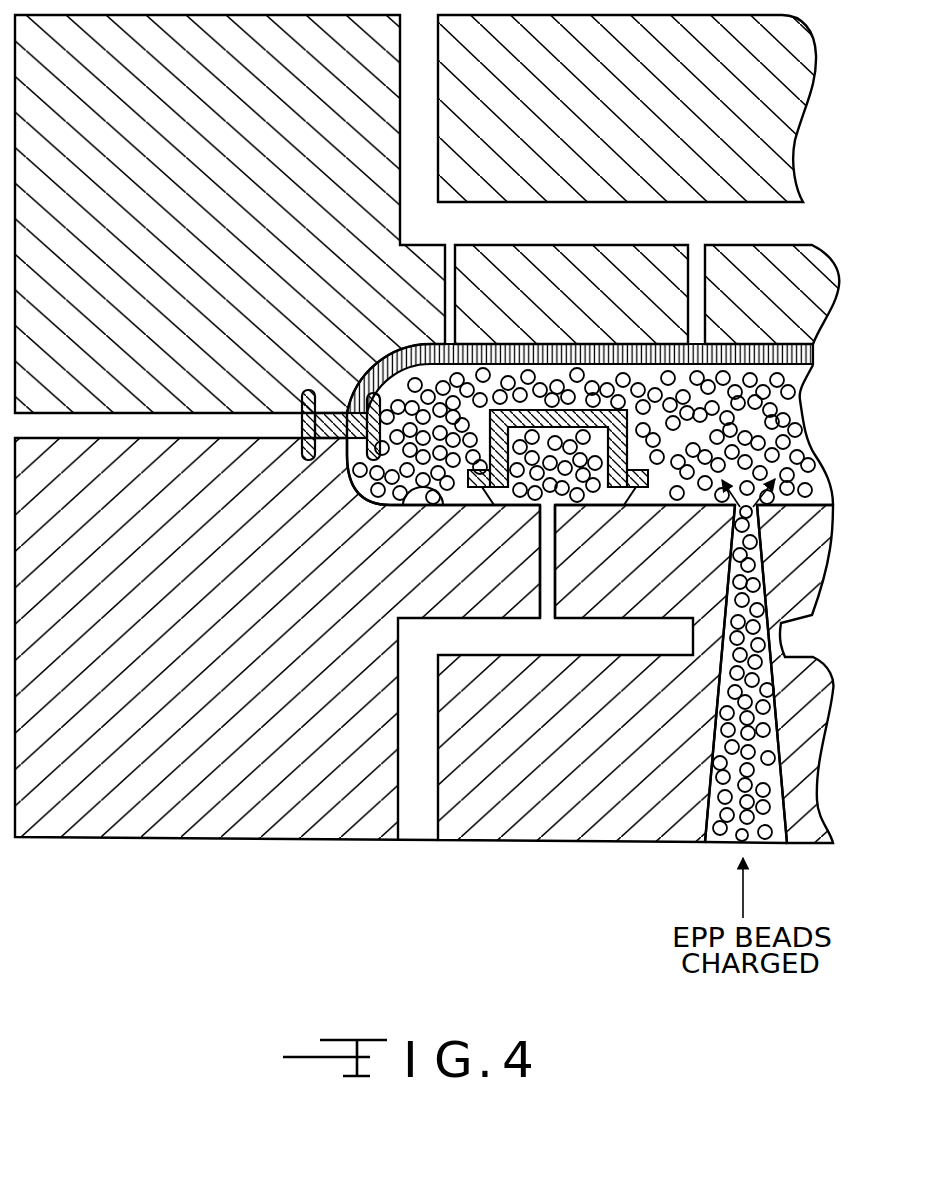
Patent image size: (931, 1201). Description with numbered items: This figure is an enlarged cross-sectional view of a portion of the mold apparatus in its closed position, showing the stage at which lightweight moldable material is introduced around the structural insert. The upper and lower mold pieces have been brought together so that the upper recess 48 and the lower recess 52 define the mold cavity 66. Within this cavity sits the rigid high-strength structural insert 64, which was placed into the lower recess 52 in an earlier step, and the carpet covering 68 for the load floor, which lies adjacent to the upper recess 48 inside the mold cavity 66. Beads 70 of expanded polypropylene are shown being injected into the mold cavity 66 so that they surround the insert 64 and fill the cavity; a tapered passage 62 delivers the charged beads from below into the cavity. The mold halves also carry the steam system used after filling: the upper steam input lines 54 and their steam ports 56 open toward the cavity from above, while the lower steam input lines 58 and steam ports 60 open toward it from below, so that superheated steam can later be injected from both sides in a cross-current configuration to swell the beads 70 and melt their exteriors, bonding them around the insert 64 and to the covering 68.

The upper recess 48 is at (560, 345).
The lower recess 52 is at (385, 508).
The upper steam input lines 54 is at (578, 202).
The steam ports 56 is at (455, 273).
The lower steam input lines 58 is at (438, 722).
The steam ports 60 is at (555, 582).
The bead fill passage 62 is at (765, 692).
The structural insert 64 is at (580, 410).
The mold cavity 66 is at (355, 478).
The covering 68 is at (395, 343).
The beads 70 is at (375, 385).